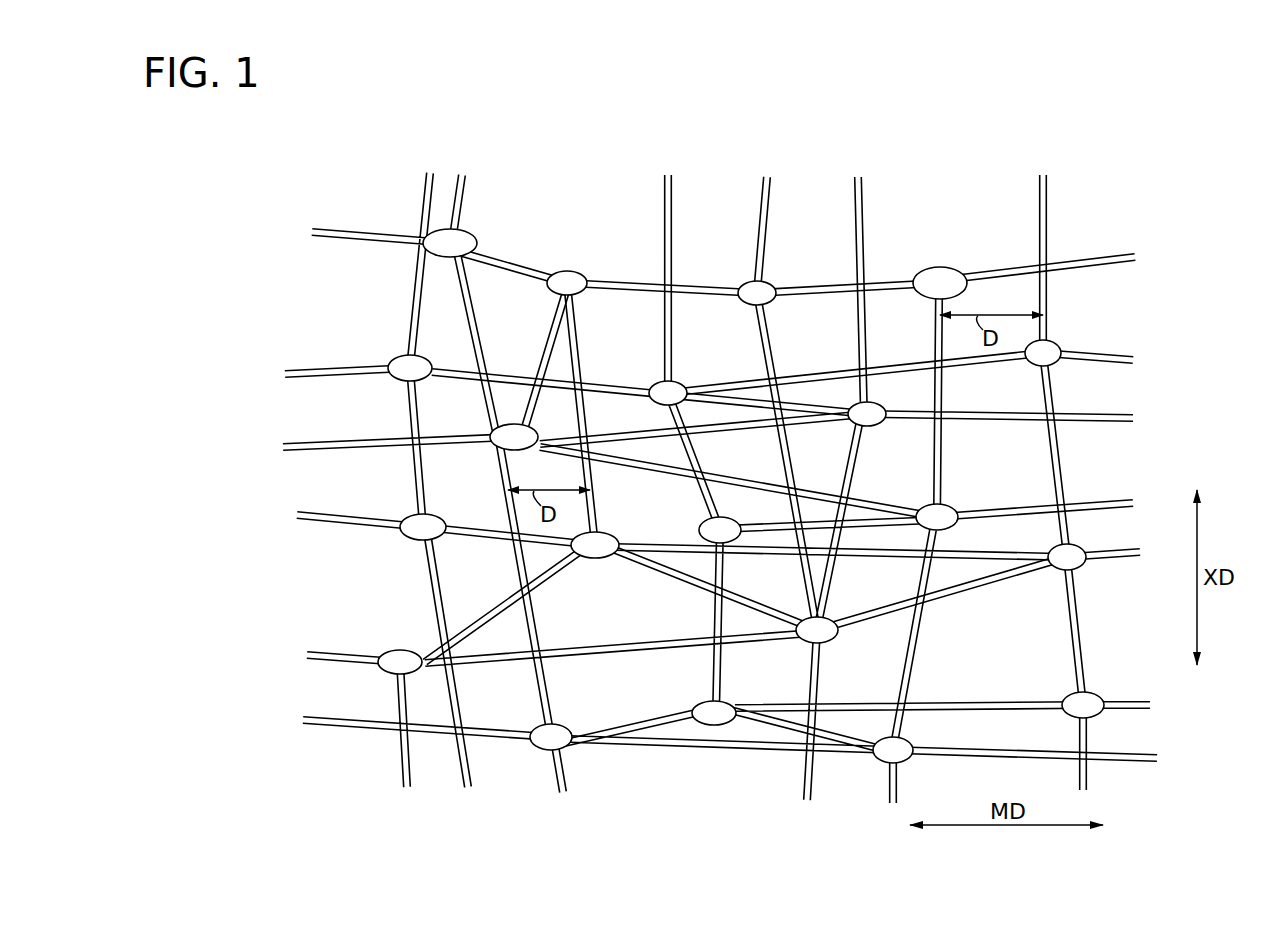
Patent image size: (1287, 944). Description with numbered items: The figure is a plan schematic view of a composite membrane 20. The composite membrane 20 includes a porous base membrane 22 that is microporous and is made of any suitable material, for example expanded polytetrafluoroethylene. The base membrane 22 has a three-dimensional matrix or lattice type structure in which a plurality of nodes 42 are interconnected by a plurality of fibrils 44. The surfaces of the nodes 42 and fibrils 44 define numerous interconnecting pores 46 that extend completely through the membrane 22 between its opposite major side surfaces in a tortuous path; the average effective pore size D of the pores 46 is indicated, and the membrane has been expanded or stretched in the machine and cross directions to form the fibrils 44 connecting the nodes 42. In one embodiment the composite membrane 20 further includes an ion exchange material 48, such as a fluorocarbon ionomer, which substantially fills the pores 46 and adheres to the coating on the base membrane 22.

The composite membrane 20 is at (330, 164).
The porous base membrane 22 is at (1094, 240).
The nodes 42 is at (462, 240).
The fibrils 44 is at (507, 262).
The pores 46 is at (1017, 301).
The ion exchange material 48 is at (437, 300).